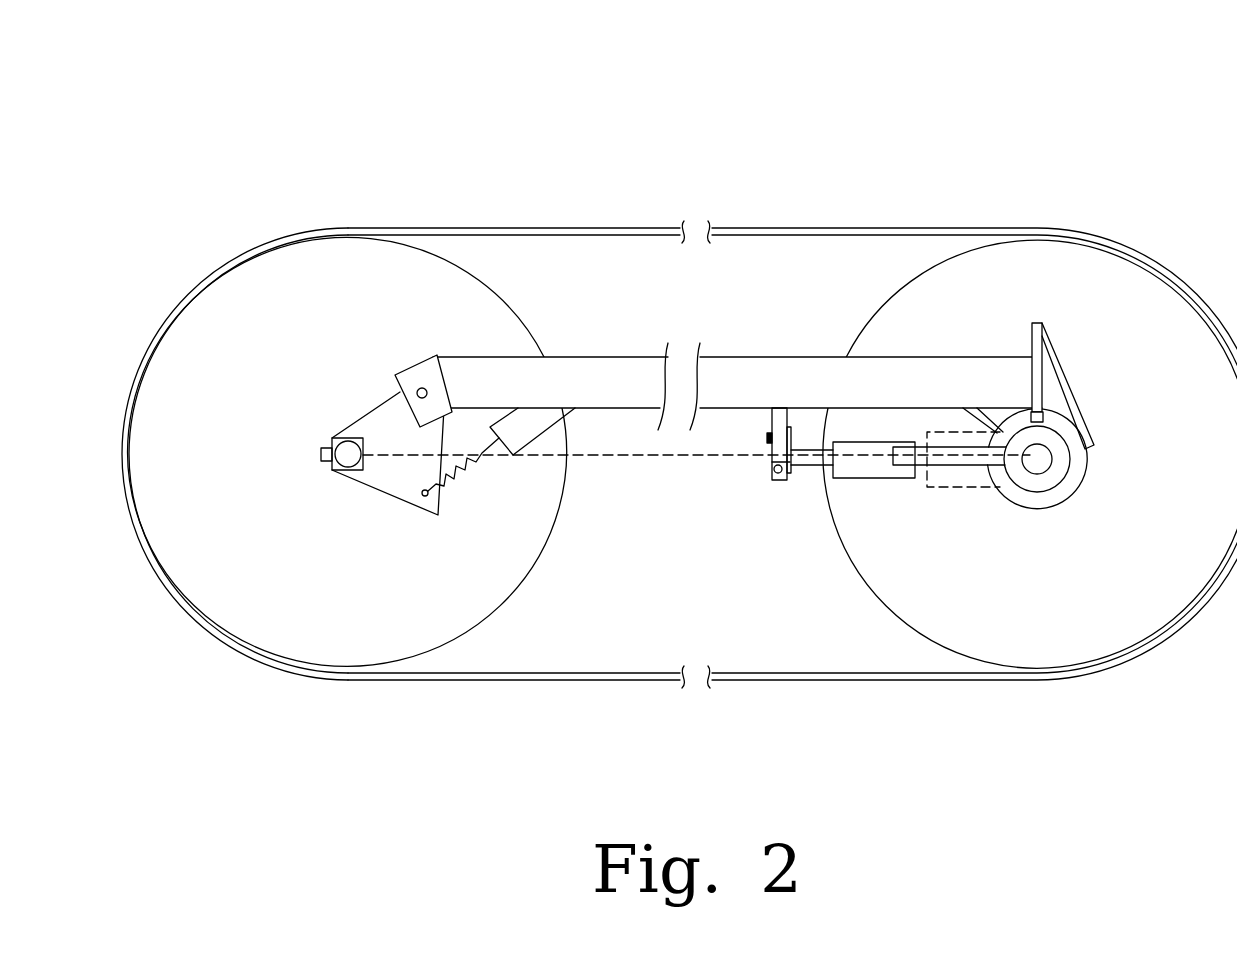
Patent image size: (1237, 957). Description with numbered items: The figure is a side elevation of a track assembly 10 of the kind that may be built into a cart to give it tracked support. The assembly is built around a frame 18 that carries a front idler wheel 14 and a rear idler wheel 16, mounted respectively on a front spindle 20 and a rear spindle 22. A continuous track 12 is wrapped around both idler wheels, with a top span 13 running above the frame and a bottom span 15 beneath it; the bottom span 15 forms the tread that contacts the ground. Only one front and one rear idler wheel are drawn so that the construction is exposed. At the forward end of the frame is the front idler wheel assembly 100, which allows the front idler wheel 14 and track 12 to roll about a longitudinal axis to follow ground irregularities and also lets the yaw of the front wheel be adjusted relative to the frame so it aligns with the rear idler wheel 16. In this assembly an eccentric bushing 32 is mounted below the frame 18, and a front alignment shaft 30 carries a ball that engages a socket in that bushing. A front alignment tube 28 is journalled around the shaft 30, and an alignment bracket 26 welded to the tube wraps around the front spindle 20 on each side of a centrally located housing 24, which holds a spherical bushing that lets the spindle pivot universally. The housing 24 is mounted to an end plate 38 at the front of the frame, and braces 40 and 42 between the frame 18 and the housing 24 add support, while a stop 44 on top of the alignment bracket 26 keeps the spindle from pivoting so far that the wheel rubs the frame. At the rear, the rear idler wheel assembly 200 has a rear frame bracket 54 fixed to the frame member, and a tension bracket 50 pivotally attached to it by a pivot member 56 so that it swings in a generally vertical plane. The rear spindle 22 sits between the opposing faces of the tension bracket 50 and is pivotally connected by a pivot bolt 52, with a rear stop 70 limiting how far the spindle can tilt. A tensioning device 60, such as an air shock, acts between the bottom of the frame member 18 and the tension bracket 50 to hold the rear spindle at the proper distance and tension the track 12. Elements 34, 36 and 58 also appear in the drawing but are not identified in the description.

The track assembly 10 is at (305, 134).
The continuous track 12 is at (800, 228).
The top span 13 is at (592, 228).
The front idler wheel 14 is at (1075, 266).
The bottom span 15 is at (538, 680).
The rear idler wheel 16 is at (220, 310).
The frame 18 is at (611, 358).
The front spindle 20 is at (1040, 458).
The rear spindle 22 is at (336, 468).
The housing 24 is at (1065, 500).
The alignment bracket 26 is at (1008, 492).
The front alignment tube 28 is at (855, 478).
The front alignment shaft 30 is at (800, 466).
The eccentric bushing 32 is at (772, 437).
The pivot pin 34 is at (773, 482).
The stop 36 is at (768, 450).
The end plate 38 is at (1032, 337).
The brace 40 is at (1060, 370).
The brace 42 is at (960, 428).
The stop 44 is at (1045, 417).
The tension bracket 50 is at (375, 486).
The pivot bolt 52 is at (322, 452).
The rear frame bracket 54 is at (400, 380).
The pivot member 56 is at (424, 389).
The spring mount block 58 is at (540, 428).
The tensioning device 60 is at (462, 470).
The rear stop 70 is at (345, 438).
The front idler wheel assembly 100 is at (1024, 552).
The rear idler wheel assembly 200 is at (402, 553).